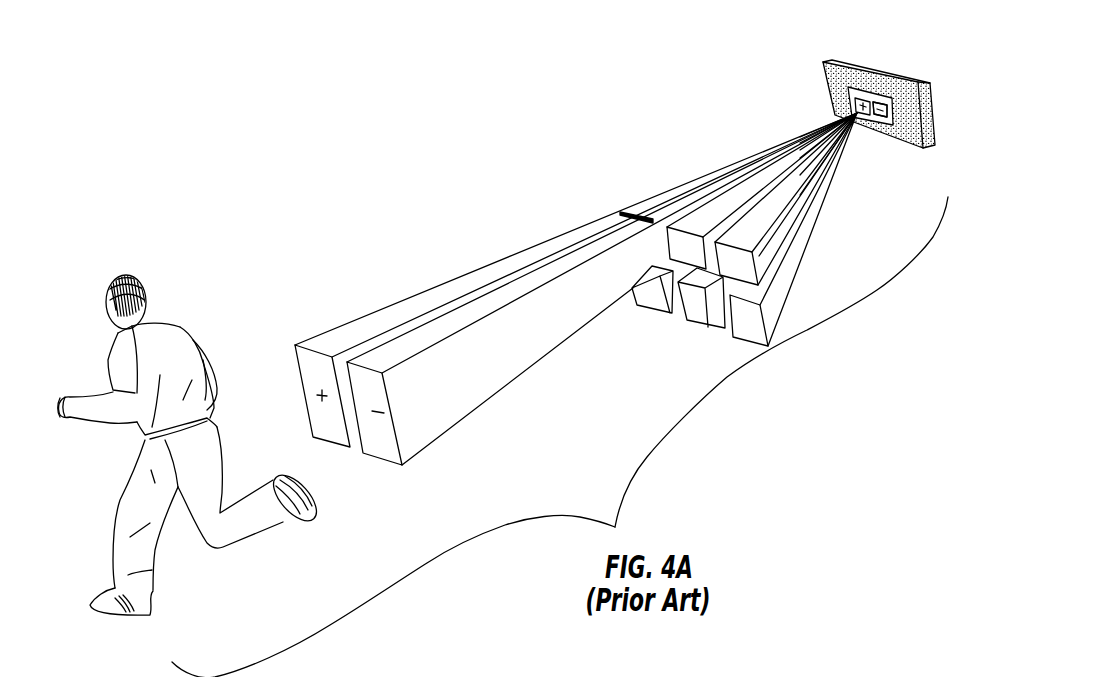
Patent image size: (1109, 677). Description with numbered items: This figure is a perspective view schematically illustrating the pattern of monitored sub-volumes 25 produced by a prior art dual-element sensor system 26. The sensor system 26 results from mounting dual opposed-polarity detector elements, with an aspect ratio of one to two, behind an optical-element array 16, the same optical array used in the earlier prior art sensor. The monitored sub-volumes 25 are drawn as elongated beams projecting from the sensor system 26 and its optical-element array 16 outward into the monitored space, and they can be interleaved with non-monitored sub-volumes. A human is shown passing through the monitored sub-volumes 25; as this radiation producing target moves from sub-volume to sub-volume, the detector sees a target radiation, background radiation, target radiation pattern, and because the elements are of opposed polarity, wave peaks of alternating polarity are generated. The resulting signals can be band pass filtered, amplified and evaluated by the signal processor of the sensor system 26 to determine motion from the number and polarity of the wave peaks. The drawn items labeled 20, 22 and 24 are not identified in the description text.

The optical-element array 16 is at (745, 324).
The tag 20 is at (848, 59).
The sensor panel 22 is at (848, 88).
The sensor element 24 is at (882, 100).
The monitored sub-volumes 25 is at (583, 273).
The dual-element sensor system 26 is at (803, 126).